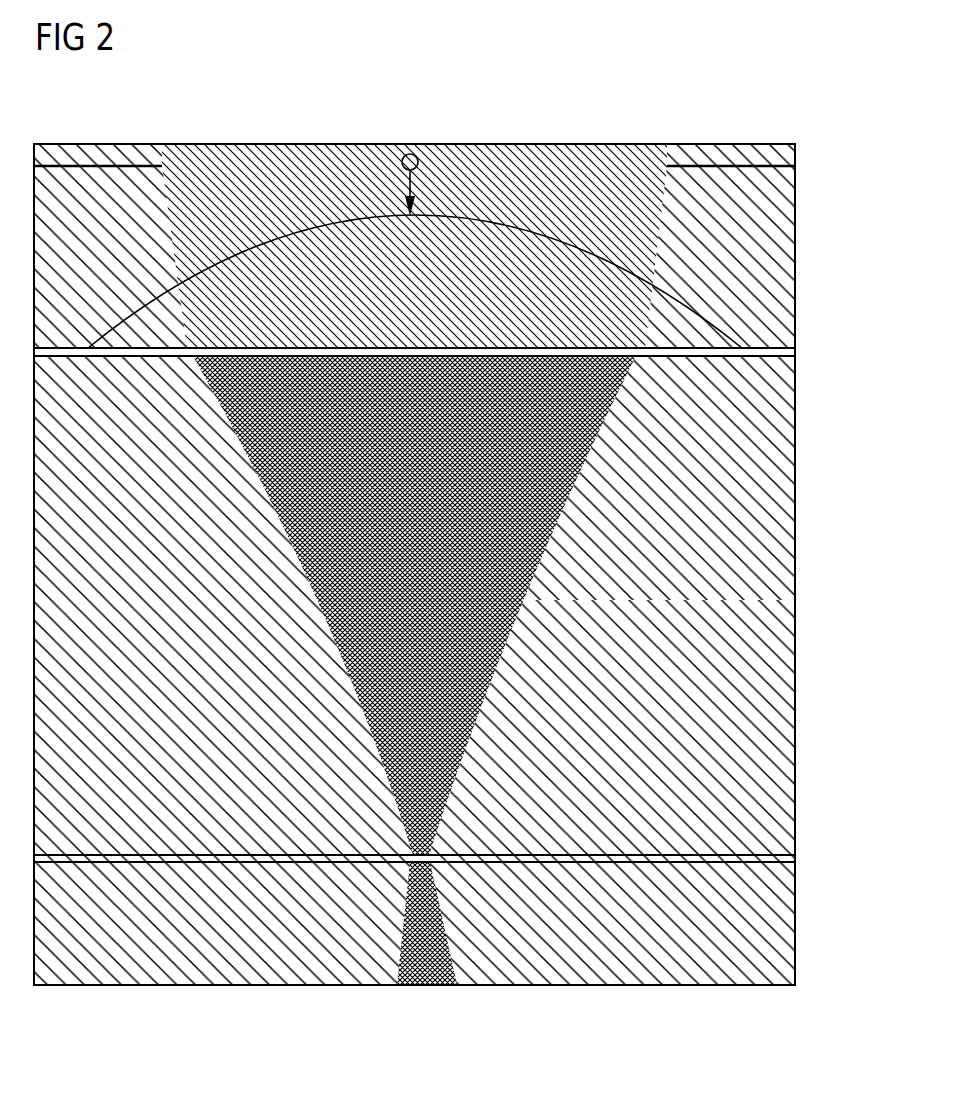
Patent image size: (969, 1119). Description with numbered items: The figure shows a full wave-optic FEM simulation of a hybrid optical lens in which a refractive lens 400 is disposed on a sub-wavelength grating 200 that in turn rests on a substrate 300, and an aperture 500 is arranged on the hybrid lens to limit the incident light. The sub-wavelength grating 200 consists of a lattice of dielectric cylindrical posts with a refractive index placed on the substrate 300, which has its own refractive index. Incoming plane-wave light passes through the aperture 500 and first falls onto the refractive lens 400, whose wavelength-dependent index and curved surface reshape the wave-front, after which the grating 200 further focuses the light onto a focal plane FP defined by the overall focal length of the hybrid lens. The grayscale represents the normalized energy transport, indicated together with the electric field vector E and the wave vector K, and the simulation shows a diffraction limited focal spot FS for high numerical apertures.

The aperture 500 is at (107, 160).
The refractive lens 400 is at (796, 265).
The sub-wavelength grating 200 is at (797, 347).
The substrate 300 is at (796, 602).
The focal plane FP is at (796, 855).
The focal spot FS is at (412, 887).
The electric field vector E is at (420, 164).
The wave vector K is at (403, 193).